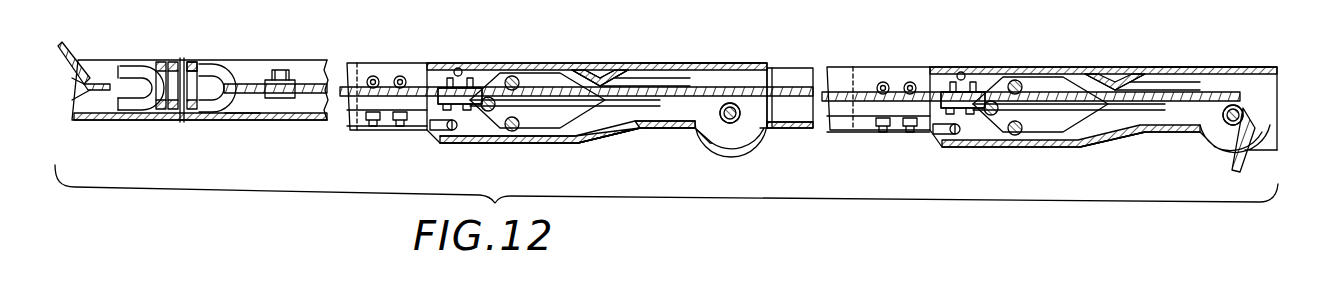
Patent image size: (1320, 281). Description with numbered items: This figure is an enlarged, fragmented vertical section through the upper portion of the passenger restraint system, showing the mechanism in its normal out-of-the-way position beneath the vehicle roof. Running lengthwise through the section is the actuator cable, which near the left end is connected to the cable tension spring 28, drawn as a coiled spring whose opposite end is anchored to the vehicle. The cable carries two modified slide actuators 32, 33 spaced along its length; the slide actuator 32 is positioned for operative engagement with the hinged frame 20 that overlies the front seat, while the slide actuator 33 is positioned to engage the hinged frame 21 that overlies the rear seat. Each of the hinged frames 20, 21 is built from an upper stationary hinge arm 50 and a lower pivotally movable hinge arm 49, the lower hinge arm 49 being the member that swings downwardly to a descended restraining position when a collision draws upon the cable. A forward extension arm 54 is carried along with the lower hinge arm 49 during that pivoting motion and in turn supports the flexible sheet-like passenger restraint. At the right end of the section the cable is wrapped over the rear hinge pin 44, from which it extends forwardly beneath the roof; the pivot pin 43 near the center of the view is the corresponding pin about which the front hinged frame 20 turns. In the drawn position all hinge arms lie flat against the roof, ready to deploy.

The hinged frame 20 is at (592, 70).
The hinged frame 21 is at (1105, 70).
The cable tension spring 28 is at (197, 60).
The slide actuator 32 is at (442, 76).
The slide actuator 33 is at (935, 126).
The pivot pin 43 is at (731, 123).
The rear hinge pin 44 is at (1235, 106).
The lower pivotally movable hinge arm 49 is at (662, 120).
The upper stationary hinge arm 50 is at (690, 67).
The forward extension arm 54 is at (231, 121).